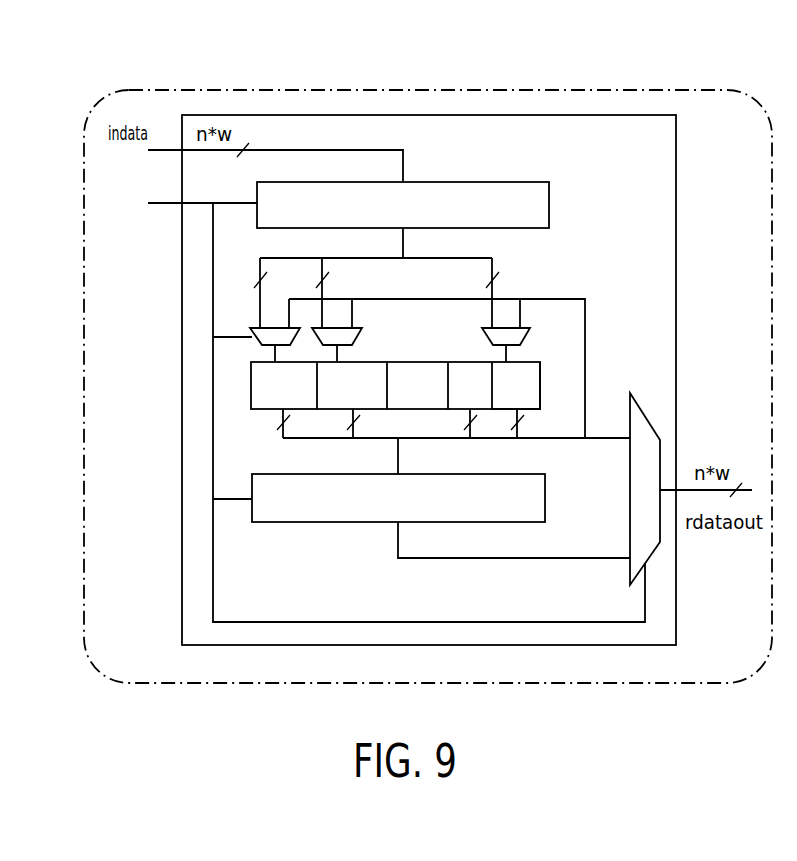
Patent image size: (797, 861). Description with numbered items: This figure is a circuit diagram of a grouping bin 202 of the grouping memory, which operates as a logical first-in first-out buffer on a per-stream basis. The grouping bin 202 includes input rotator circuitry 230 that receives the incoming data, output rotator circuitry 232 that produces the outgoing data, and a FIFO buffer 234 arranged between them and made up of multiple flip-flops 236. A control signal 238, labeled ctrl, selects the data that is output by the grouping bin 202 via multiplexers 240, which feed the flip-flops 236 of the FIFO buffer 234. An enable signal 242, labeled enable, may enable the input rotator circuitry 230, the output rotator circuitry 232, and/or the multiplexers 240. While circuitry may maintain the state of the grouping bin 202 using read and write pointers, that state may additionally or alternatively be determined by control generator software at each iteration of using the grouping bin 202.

The grouping bin 202 is at (456, 46).
The input rotator circuitry 230 is at (476, 182).
The output rotator circuitry 232 is at (547, 497).
The FIFO buffer 234 is at (371, 385).
The flip-flops 236 is at (541, 385).
The control signal 238 is at (110, 181).
The multiplexers 240 is at (357, 328).
The enable signal 242 is at (127, 237).